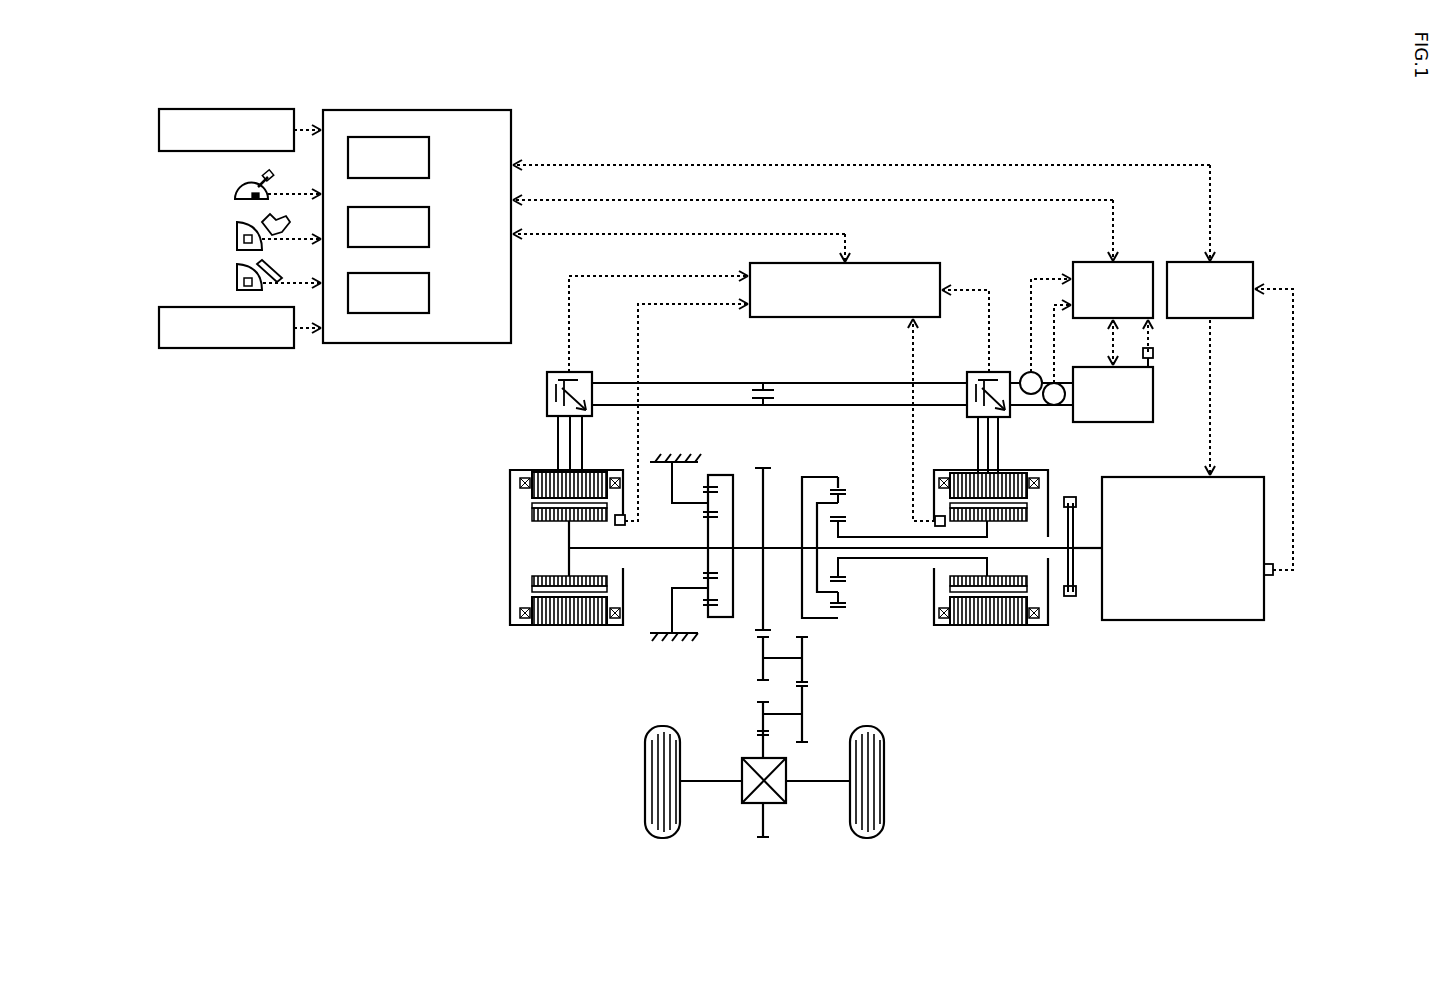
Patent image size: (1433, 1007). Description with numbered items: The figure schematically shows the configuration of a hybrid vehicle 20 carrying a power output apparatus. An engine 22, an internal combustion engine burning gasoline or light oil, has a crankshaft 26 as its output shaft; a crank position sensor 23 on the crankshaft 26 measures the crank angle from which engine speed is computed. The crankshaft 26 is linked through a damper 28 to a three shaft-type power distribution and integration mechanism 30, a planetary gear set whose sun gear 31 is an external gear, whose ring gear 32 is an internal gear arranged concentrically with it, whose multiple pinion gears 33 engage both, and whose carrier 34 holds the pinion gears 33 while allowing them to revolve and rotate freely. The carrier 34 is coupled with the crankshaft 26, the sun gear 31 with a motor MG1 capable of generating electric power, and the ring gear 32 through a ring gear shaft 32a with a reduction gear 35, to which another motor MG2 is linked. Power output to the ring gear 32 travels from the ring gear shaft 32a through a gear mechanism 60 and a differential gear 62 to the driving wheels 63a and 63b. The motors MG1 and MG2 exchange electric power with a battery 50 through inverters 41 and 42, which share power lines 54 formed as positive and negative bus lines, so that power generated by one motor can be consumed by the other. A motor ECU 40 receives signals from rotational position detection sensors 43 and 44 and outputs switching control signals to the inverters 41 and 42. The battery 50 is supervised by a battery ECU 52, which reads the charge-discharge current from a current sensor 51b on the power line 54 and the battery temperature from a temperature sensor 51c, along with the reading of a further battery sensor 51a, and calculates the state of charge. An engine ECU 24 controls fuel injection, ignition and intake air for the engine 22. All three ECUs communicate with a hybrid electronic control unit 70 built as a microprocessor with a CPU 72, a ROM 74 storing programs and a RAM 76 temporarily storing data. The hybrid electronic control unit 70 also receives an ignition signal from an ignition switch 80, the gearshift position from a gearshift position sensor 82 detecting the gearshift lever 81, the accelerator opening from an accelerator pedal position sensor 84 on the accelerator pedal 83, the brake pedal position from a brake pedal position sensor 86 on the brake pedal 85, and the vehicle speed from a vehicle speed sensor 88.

The hybrid vehicle 20 is at (1019, 133).
The engine 22 is at (1248, 477).
The crank position sensor 23 is at (1272, 578).
The engine ECU 24 is at (1228, 262).
The crankshaft 26 is at (1085, 550).
The damper 28 is at (1075, 596).
The power distribution and integration mechanism 30 is at (894, 532).
The sun gear 31 is at (840, 563).
The ring gear 32 is at (840, 612).
The ring gear shaft 32a is at (787, 547).
The pinion gears 33 is at (840, 588).
The carrier 34 is at (838, 500).
The reduction gear 35 is at (710, 460).
The motor ECU 40 is at (885, 263).
The inverter 41 is at (983, 372).
The inverter 42 is at (580, 372).
The rotational position detection sensor 43 is at (938, 516).
The rotational position detection sensor 44 is at (620, 515).
The battery 50 is at (1113, 422).
The voltage sensor 51a is at (1063, 383).
The current sensor 51b is at (1026, 372).
The temperature sensor 51c is at (1156, 355).
The battery ECU 52 is at (1090, 262).
The power lines 54 is at (827, 404).
The gear mechanism 60 is at (845, 696).
The differential gear 62 is at (786, 795).
The driving wheel 63a is at (645, 813).
The driving wheel 63b is at (884, 813).
The hybrid electronic control unit 70 is at (418, 110).
The CPU 72 is at (429, 160).
The ROM 74 is at (429, 230).
The RAM 76 is at (429, 296).
The ignition switch 80 is at (159, 128).
The gearshift lever 81 is at (262, 175).
The gearshift position sensor 82 is at (237, 194).
The accelerator pedal 83 is at (268, 217).
The accelerator pedal position sensor 84 is at (240, 239).
The brake pedal 85 is at (262, 265).
The brake pedal position sensor 86 is at (240, 285).
The vehicle speed sensor 88 is at (159, 328).
The motor MG1 is at (987, 627).
The motor MG2 is at (545, 470).